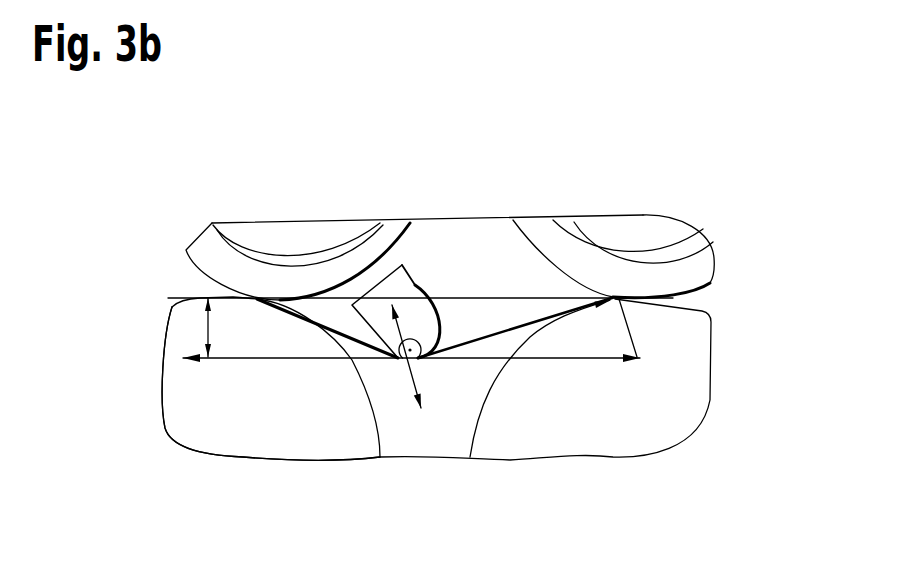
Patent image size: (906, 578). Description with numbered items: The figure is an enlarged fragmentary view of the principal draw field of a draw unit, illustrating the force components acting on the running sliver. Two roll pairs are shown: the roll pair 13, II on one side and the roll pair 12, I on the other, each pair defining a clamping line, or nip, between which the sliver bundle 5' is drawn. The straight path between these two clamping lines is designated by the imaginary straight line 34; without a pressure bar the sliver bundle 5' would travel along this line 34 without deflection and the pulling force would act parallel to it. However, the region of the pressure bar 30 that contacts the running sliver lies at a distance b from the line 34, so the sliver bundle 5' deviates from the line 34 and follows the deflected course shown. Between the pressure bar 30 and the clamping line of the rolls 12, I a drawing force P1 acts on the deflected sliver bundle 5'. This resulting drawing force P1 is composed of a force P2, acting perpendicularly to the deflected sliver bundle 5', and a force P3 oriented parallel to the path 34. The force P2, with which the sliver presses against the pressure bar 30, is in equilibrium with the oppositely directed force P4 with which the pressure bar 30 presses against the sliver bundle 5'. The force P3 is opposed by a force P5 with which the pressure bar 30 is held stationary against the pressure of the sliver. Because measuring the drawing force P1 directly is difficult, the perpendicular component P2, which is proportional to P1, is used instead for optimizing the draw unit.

The roll 12 is at (673, 230).
The roll 13 is at (200, 255).
The sliver bundle 5' is at (381, 284).
The pressure bar 30 is at (405, 287).
The imaginary straight line 34 is at (457, 298).
The drawing force P1 is at (524, 322).
The force component perpendicular to the sliver bundle P2 is at (362, 300).
The force component parallel to the path P3 is at (549, 359).
The counterforce of the pressure bar P4 is at (402, 358).
The holding force P5 is at (287, 358).
The distance b is at (210, 328).
The roll I is at (680, 410).
The roll II is at (203, 410).